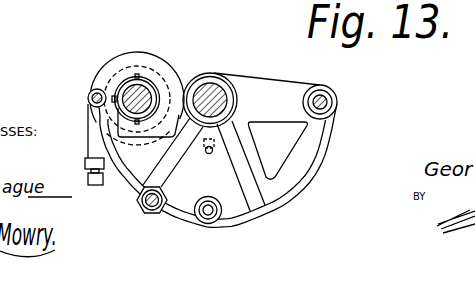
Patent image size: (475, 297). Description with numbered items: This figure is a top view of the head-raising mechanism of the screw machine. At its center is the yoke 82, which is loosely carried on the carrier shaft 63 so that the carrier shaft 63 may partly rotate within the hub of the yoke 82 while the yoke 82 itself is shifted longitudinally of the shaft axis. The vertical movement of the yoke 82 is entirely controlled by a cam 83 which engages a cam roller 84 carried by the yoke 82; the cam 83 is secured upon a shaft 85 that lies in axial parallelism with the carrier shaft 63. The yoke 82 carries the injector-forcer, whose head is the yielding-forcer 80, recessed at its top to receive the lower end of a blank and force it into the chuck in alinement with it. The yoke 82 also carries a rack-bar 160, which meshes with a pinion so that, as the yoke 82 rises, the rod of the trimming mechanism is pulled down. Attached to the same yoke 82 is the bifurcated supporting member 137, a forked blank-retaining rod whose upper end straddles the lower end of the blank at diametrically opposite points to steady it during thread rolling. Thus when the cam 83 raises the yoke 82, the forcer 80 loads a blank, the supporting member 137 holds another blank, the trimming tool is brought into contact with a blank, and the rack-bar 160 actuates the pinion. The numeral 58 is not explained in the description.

The shaft 58 is at (215, 11).
The carrier shaft 63 is at (205, 88).
The yielding-forcer 80 is at (332, 110).
The yoke 82 is at (320, 167).
The cam 83 is at (151, 66).
The cam roller 84 is at (175, 130).
The shaft 85 is at (130, 88).
The bifurcated supporting member 137 is at (88, 98).
The rack-bar 160 is at (207, 221).